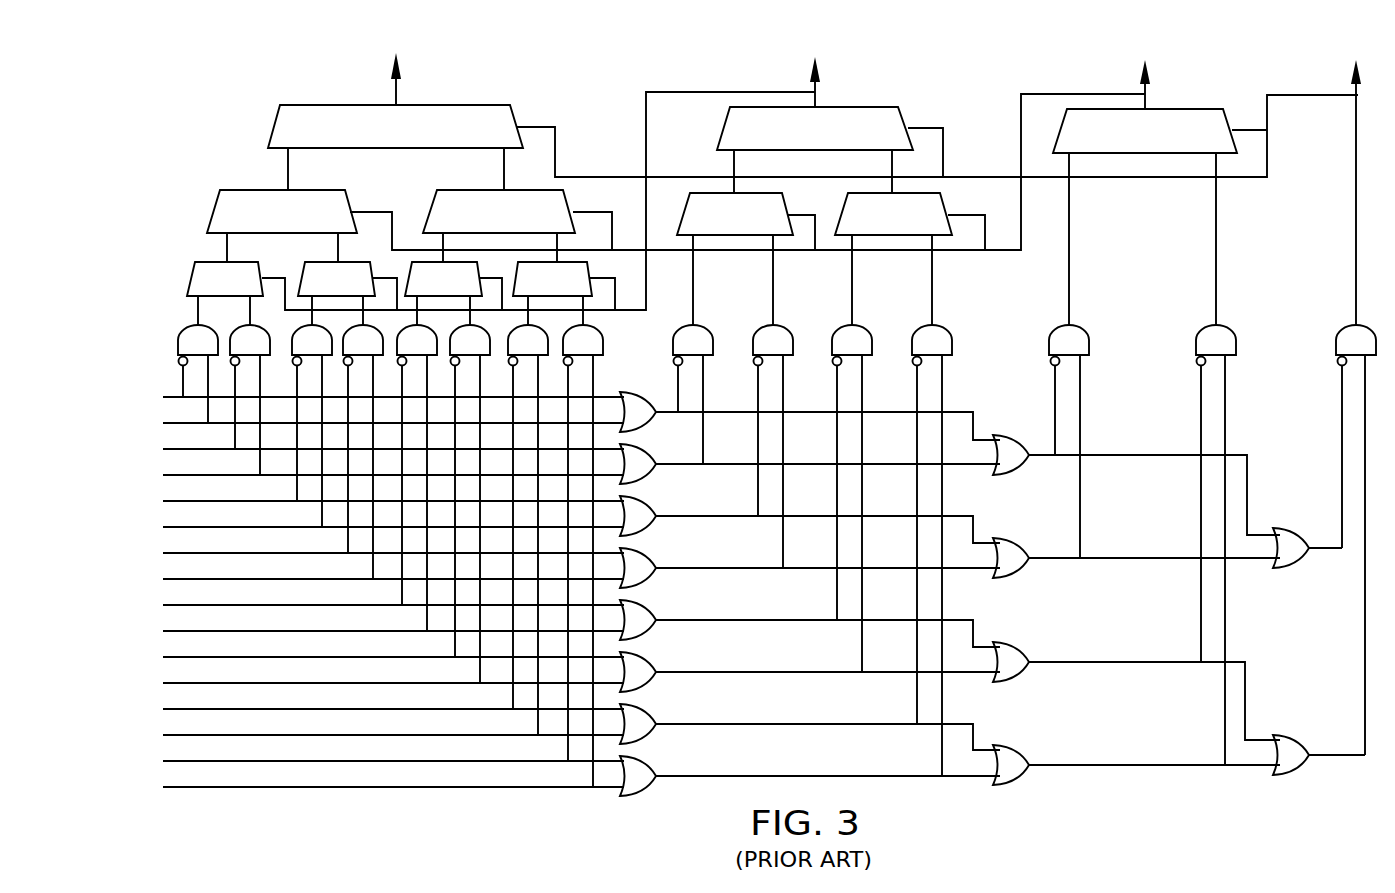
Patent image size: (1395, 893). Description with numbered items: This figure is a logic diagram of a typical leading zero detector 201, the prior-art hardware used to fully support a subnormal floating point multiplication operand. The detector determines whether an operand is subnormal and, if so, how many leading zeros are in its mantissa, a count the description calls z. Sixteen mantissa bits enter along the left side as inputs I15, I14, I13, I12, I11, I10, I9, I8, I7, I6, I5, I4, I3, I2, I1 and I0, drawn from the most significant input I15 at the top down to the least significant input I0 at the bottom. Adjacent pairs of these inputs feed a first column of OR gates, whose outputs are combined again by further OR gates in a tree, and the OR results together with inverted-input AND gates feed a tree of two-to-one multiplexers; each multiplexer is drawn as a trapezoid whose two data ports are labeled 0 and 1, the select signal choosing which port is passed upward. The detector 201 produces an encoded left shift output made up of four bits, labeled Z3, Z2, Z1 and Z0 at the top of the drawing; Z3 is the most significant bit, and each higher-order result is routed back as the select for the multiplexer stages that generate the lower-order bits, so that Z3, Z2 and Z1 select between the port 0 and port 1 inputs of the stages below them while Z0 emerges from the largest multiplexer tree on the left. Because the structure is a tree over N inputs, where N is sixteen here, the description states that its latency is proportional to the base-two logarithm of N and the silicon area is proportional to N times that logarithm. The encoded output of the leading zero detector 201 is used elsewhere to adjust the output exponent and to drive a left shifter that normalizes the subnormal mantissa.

The leading zero detector 201 is at (745, 435).
The multiplexer 0 input port 0 is at (636, 209).
The multiplexer 1 input port 1 is at (734, 209).
The encoded left shift output bit z0 Z0 is at (398, 66).
The encoded left shift output bit z1 Z1 is at (817, 68).
The encoded left shift output bit z2 Z2 is at (1149, 69).
The encoded left shift output bit z3 Z3 is at (1361, 177).
The input I0 is at (152, 780).
The input I1 is at (152, 754).
The input I2 is at (152, 728).
The input I3 is at (152, 702).
The input I4 is at (152, 676).
The input I5 is at (152, 650).
The input I6 is at (152, 624).
The input I7 is at (152, 598).
The input I8 is at (152, 572).
The input I9 is at (152, 546).
The input I10 is at (152, 520).
The input I11 is at (152, 494).
The input I12 is at (152, 468).
The input I13 is at (152, 442).
The input I14 is at (152, 416).
The input I15 is at (152, 390).